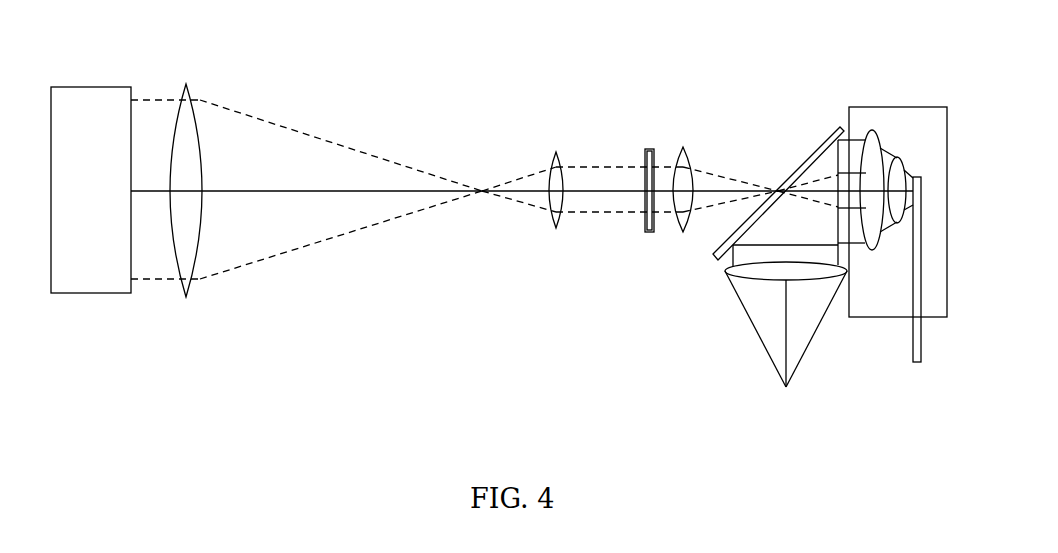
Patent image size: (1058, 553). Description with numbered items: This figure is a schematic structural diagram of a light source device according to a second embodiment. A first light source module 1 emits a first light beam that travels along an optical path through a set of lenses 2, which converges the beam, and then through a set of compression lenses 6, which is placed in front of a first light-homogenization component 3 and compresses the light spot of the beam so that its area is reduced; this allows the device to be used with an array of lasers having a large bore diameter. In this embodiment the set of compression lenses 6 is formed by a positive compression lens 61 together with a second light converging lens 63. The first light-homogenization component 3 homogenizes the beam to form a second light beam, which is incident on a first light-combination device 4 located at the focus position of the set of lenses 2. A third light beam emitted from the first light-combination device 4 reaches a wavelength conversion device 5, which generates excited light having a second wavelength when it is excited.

The first light source module 1 is at (83, 135).
The set of lenses 2 is at (185, 135).
The first light-homogenization component 3 is at (645, 150).
The first light-combination device 4 is at (817, 150).
The wavelength conversion device 5 is at (910, 137).
The set of compression lenses 6 is at (683, 232).
The positive compression lens 61 is at (553, 160).
The second light converging lens 63 is at (683, 155).